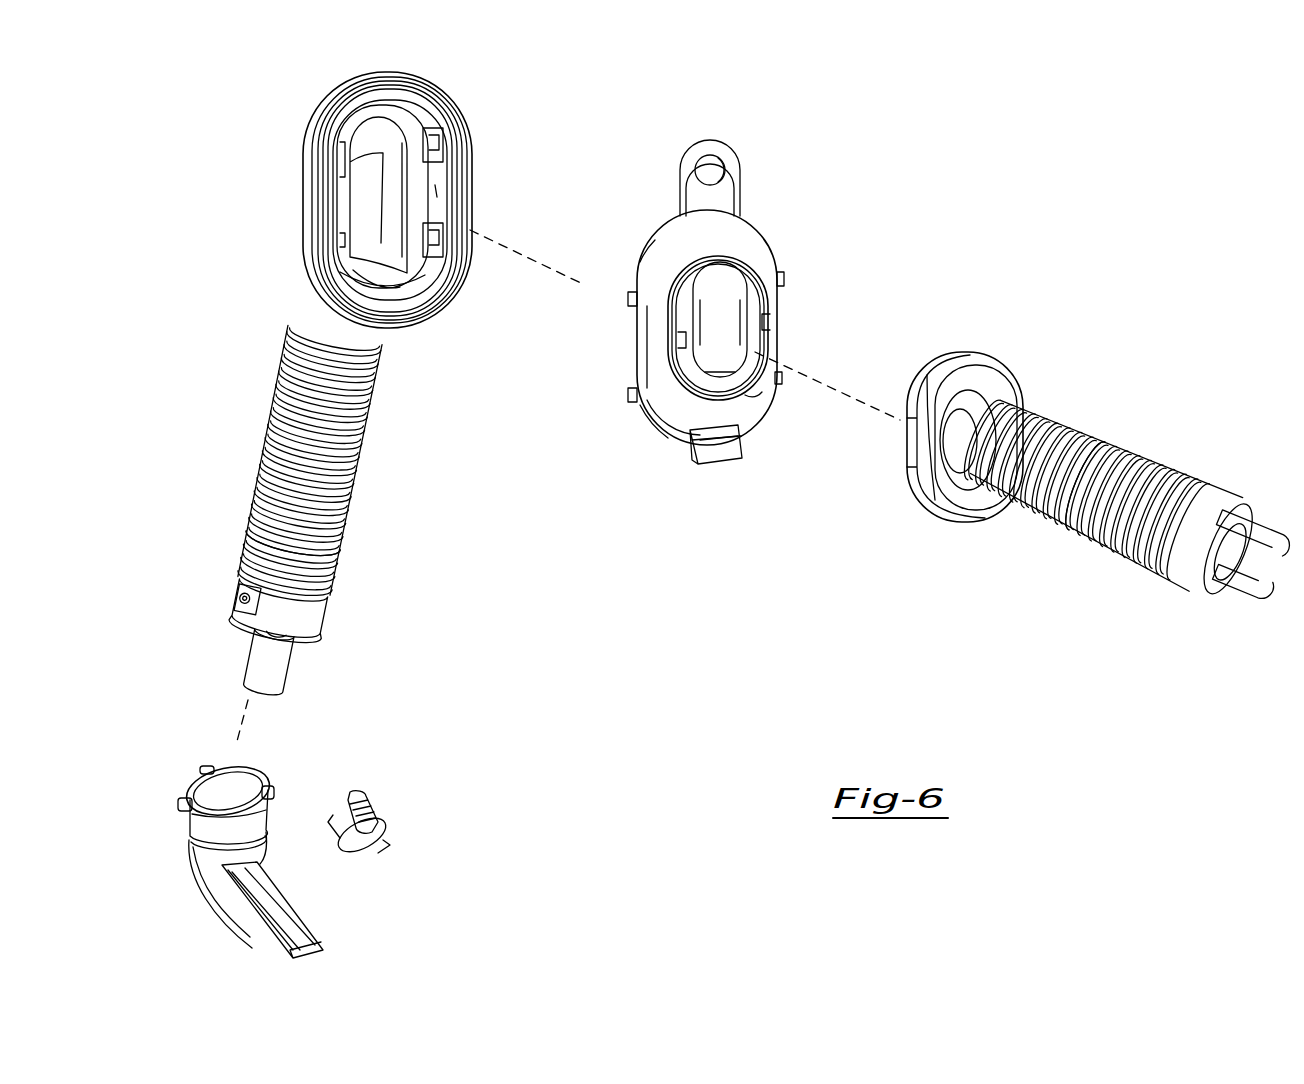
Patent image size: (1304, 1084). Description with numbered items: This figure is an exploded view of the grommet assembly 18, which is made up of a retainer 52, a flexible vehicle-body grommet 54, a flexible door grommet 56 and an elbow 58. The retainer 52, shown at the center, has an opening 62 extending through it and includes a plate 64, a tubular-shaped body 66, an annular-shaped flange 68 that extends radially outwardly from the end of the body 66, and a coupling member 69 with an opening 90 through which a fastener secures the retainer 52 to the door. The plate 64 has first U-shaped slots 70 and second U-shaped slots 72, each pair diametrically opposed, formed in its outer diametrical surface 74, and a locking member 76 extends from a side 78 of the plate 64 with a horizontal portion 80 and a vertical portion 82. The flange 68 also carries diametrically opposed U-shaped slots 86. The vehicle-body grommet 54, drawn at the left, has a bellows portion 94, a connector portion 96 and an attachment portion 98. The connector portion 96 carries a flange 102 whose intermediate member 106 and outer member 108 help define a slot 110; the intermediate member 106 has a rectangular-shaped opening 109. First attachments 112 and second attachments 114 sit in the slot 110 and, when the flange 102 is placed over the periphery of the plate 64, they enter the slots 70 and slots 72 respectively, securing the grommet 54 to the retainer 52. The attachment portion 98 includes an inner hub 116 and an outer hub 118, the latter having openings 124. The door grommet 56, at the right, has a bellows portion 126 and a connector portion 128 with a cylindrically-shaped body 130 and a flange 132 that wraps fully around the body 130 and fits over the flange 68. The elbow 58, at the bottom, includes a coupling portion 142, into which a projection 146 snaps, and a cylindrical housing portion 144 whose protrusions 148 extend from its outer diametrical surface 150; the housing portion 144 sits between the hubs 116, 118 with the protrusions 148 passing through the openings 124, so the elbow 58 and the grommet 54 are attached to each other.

The grommet assembly 18 is at (1100, 270).
The retainer 52 is at (752, 216).
The flexible vehicle-body grommet 54 is at (358, 428).
The flexible door grommet 56 is at (1108, 453).
The elbow 58 is at (188, 868).
The opening 62 is at (722, 278).
The plate 64 is at (680, 445).
The tubular-shaped body 66 is at (678, 275).
The annular-shaped flange 68 is at (745, 395).
The coupling member 69 is at (708, 150).
The first U-shaped slots 70 is at (640, 398).
The second U-shaped slots 72 is at (778, 280).
The outer diametrical surface 74 is at (648, 265).
The locking member 76 is at (745, 440).
The side 78 is at (640, 428).
The horizontal portion 80 is at (710, 365).
The vertical portion 82 is at (725, 455).
The U-shaped slots 86 is at (770, 322).
The opening 90 is at (712, 170).
The bellows portion 94 is at (322, 550).
The connector portion 96 is at (325, 115).
The attachment portion 98 is at (300, 612).
The flange 102 is at (305, 158).
The intermediate member 106 is at (312, 210).
The outer member 108 is at (450, 108).
The rectangular-shaped opening 109 is at (365, 75).
The slot 110 is at (443, 192).
The first attachments 112 is at (438, 250).
The second attachments 114 is at (443, 150).
The inner hub 116 is at (280, 648).
The outer hub 118 is at (262, 605).
The openings 124 is at (237, 593).
The bellows portion 126 is at (1080, 445).
The connector portion 128 is at (937, 365).
The cylindrically-shaped body 130 is at (975, 412).
The flange 132 is at (990, 370).
The coupling portion 142 is at (295, 900).
The housing portion 144 is at (250, 822).
The projection 146 is at (390, 810).
The protrusions 148 is at (190, 760).
The outer diametrical surface 150 is at (200, 820).